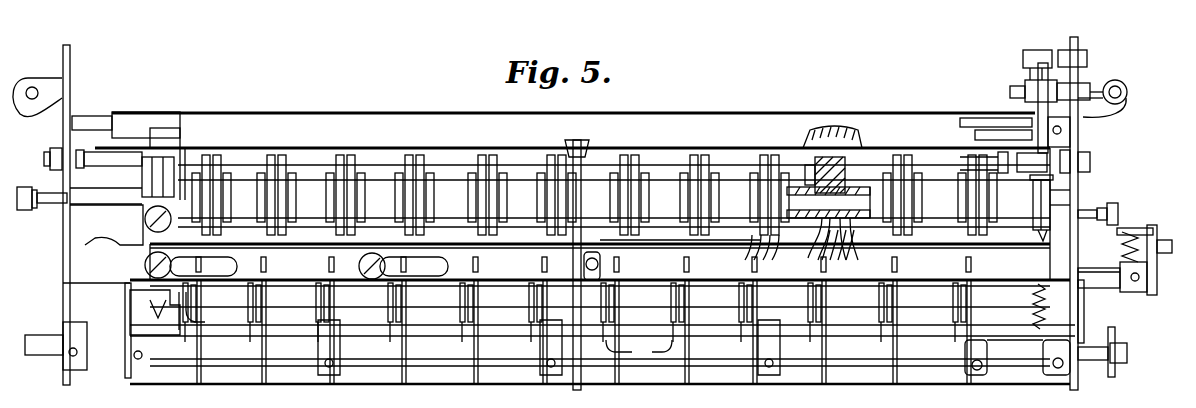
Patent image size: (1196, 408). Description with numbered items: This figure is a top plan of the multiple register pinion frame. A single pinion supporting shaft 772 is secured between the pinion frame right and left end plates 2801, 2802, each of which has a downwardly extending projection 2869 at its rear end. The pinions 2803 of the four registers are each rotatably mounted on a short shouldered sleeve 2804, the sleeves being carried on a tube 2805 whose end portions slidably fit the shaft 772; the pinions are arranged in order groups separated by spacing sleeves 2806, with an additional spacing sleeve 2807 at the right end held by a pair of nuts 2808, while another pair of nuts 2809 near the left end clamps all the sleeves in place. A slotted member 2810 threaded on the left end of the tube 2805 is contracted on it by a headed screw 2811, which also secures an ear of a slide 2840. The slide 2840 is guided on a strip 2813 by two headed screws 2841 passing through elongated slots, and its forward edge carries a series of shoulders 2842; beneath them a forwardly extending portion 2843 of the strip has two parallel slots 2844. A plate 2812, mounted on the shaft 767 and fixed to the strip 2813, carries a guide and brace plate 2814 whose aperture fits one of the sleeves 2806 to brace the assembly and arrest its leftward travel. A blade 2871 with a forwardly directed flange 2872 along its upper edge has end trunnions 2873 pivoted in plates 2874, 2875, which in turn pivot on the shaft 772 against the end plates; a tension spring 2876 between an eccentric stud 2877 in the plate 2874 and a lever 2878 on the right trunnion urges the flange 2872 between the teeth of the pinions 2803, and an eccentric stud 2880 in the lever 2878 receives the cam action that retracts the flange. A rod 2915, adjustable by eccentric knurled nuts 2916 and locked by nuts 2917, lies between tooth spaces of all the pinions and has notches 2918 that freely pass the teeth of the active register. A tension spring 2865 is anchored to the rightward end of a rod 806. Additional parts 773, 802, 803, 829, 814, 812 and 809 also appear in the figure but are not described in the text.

The projections 2869 is at (43, 75).
The plate 2875 is at (71, 74).
The trunnions 2873 is at (93, 118).
The knurled nuts 2916 is at (72, 147).
The nuts 2917 is at (52, 157).
The member 2810 is at (143, 177).
The pinion supporting shaft 772 is at (130, 195).
The headed screw 2811 is at (145, 222).
The bolt 773 is at (48, 204).
The left end plate 2802 is at (62, 277).
The block 802 is at (1107, 278).
The headed screws 2841 is at (146, 261).
The shoulders 2842 is at (195, 292).
The slots 2844 is at (160, 318).
The shaft 767 is at (42, 343).
The forwardly extending portion 2843 is at (192, 345).
The nuts 2809 is at (183, 175).
The slide 2840 is at (308, 248).
The blade 2871 is at (345, 108).
The flange 2872 is at (380, 145).
The strip 2813 is at (515, 260).
The guide and brace plate 2814 is at (576, 152).
The plate 2812 is at (585, 150).
The contact bar 803 is at (662, 242).
The wire loop 829 is at (639, 351).
The rod 2915 is at (807, 137).
The notches 2918 is at (817, 167).
The shouldered sleeve 2804 is at (830, 209).
The spacing sleeves 2806 is at (810, 226).
The tube 2805 is at (846, 225).
The pinions 2803 is at (808, 253).
The spacing sleeve 2807 is at (1020, 212).
The nuts 2808 is at (1043, 241).
The right end plate 2801 is at (1073, 275).
The tension spring 2865 is at (1037, 307).
The rod 806 is at (1020, 340).
The stud 2877 is at (1043, 50).
The tension spring 2876 is at (1032, 70).
The lever 2878 is at (1038, 110).
The stud 2880 is at (1093, 87).
The plate 2874 is at (1079, 130).
The stud 814 is at (1137, 233).
The spring 812 is at (1123, 250).
The bracket 809 is at (1152, 297).